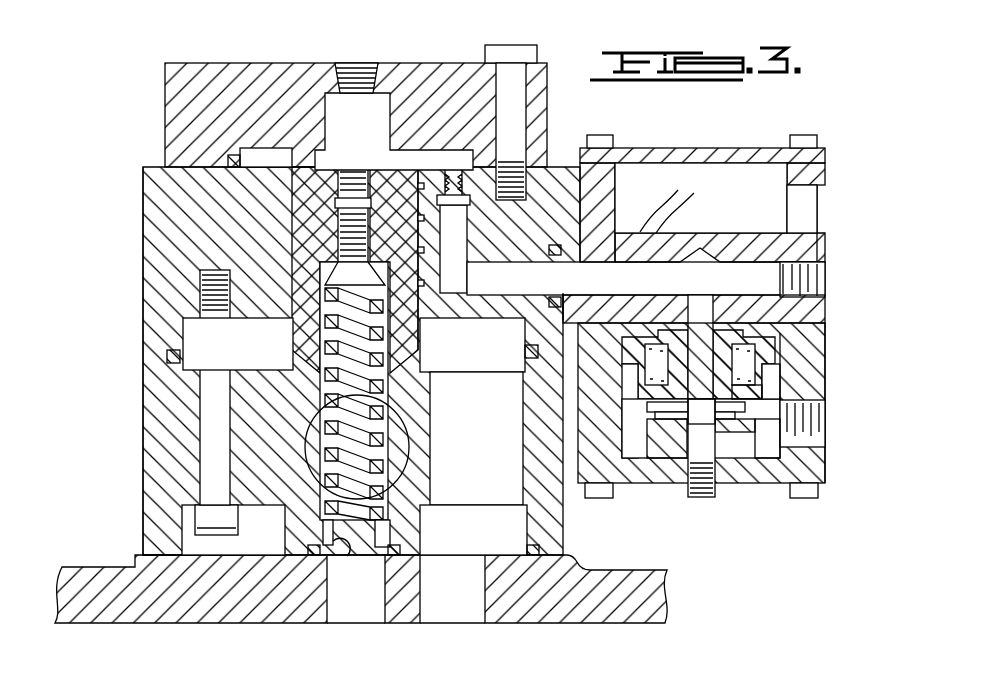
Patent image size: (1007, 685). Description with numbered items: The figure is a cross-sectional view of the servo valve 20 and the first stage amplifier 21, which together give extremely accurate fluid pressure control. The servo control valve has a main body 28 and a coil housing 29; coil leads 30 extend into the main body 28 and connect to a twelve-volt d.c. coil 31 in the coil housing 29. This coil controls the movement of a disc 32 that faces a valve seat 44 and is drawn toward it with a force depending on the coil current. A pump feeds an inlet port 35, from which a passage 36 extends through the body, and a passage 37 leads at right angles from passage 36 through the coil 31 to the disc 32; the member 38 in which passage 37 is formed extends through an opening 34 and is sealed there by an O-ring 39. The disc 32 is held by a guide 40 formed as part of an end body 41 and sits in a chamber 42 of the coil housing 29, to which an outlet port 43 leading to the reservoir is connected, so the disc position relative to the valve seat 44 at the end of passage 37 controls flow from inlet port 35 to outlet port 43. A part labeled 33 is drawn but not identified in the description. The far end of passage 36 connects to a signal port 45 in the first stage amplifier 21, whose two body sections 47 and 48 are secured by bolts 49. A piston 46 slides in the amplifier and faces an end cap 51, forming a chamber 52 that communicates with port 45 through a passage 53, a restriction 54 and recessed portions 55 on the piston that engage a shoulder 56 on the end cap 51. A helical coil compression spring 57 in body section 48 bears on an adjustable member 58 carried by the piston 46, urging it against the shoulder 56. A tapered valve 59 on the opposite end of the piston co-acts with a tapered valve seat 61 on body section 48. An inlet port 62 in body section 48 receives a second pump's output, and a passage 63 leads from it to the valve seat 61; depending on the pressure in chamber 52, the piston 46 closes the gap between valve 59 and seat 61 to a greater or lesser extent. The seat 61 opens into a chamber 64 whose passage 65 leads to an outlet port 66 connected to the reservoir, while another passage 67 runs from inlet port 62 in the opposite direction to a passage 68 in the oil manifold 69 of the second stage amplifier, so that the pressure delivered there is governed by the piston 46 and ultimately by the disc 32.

The servo valve 20 is at (836, 238).
The first stage amplifier 21 is at (134, 217).
The main body 28 is at (590, 197).
The coil housing 29 is at (818, 351).
The coil leads 30 is at (676, 200).
The 12-volt d.c. coil 31 is at (752, 360).
The disc 32 is at (724, 400).
The piston lower member 33 is at (647, 413).
The opening 34 is at (672, 482).
The inlet port 35 is at (820, 260).
The passage 36 is at (618, 263).
The passage 37 is at (705, 312).
The member 38 is at (735, 345).
The O-ring 39 is at (755, 386).
The guide 40 is at (778, 405).
The end body 41 is at (636, 478).
The chamber 42 is at (768, 442).
The outlet port 43 is at (812, 421).
The valve seat 44 is at (696, 404).
The signal port 45 is at (543, 262).
The piston 46 is at (305, 203).
The body section 47 is at (165, 298).
The body section 48 is at (158, 409).
The bolts 49 is at (212, 443).
The end cap 51 is at (236, 80).
The chamber 52 is at (392, 92).
The passage 53 is at (480, 268).
The restriction 54 is at (453, 190).
The recessed portions 55 is at (412, 147).
The shoulder 56 is at (262, 152).
The helical coil compression spring 57 is at (398, 456).
The adjustable member 58 is at (338, 232).
The valve 59 is at (405, 363).
The valve seat 61 is at (408, 395).
The inlet port 62 is at (320, 447).
The passage 63 is at (312, 388).
The chamber 64 is at (284, 353).
The passage 65 is at (518, 478).
The outlet port 66 is at (427, 602).
The passage 67 is at (330, 560).
The passage 68 is at (327, 627).
The oil manifold 69 is at (187, 616).